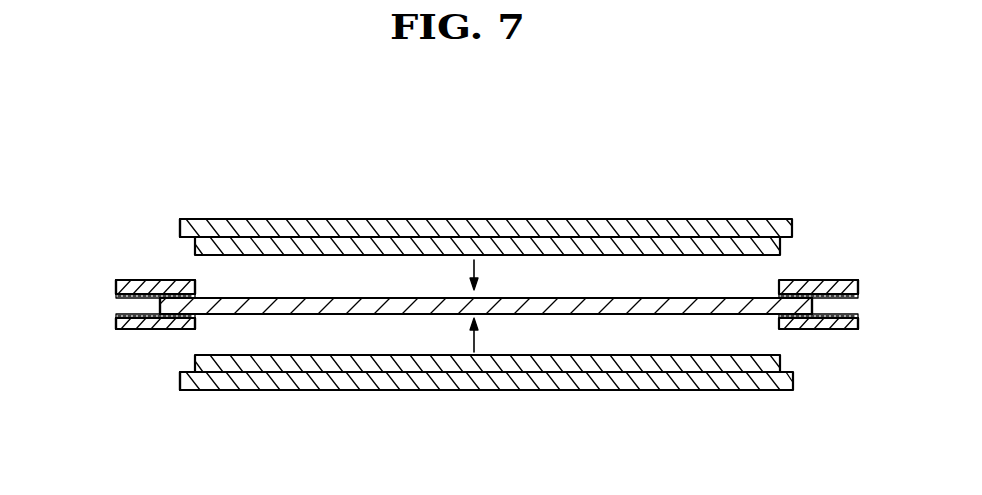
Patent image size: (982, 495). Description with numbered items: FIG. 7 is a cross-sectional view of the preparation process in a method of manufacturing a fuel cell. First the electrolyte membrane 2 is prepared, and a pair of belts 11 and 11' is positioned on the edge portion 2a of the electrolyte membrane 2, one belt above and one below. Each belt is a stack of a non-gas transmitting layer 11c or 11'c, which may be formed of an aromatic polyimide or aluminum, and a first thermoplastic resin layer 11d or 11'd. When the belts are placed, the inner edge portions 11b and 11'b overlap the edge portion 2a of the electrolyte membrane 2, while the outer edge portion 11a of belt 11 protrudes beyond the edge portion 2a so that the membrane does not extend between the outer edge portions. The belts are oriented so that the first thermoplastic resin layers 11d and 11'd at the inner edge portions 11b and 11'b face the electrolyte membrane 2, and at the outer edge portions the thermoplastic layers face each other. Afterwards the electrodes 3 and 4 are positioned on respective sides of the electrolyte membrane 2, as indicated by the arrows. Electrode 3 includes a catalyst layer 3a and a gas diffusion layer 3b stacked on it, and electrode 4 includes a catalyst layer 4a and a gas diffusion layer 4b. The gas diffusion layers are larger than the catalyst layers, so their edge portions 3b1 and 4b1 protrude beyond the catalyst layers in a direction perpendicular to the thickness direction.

The electrolyte membrane 2 is at (648, 297).
The edge portion of the electrolyte membrane 2a is at (172, 280).
The electrode 3 is at (486, 194).
The catalyst layer 3a is at (563, 242).
The gas diffusion layer 3b is at (605, 228).
The edge portion of the gas diffusion layer 3b1 is at (190, 219).
The electrode 4 is at (486, 418).
The catalyst layer 4a is at (540, 362).
The gas diffusion layer 4b is at (600, 380).
The edge portion of the gas diffusion layer 4b1 is at (188, 382).
The belt 11 is at (456, 234).
The outer edge portion of the belt 11a is at (130, 280).
The inner edge portion of the belt 11b is at (191, 280).
The non-gas transmitting layer 11c is at (116, 283).
The first thermoplastic resin layer 11d is at (116, 298).
The belt 11' is at (444, 372).
The inner edge portion of the belt 11'b is at (495, 375).
The non-gas transmitting layer 11'c is at (75, 343).
The first thermoplastic resin layer 11'd is at (435, 324).